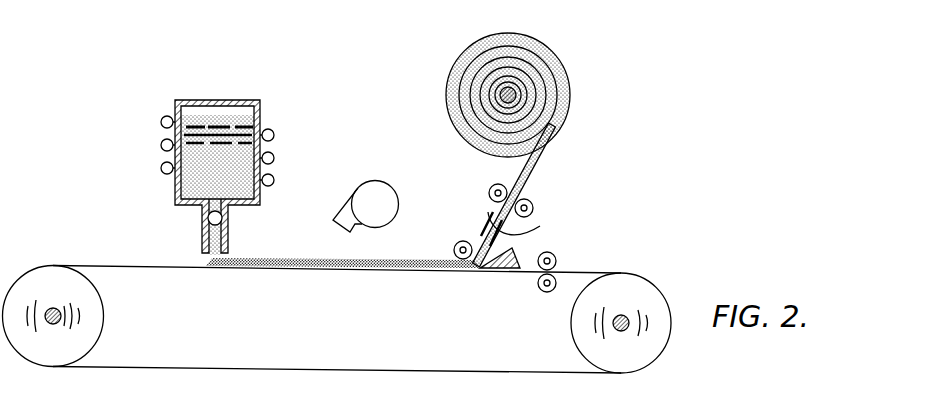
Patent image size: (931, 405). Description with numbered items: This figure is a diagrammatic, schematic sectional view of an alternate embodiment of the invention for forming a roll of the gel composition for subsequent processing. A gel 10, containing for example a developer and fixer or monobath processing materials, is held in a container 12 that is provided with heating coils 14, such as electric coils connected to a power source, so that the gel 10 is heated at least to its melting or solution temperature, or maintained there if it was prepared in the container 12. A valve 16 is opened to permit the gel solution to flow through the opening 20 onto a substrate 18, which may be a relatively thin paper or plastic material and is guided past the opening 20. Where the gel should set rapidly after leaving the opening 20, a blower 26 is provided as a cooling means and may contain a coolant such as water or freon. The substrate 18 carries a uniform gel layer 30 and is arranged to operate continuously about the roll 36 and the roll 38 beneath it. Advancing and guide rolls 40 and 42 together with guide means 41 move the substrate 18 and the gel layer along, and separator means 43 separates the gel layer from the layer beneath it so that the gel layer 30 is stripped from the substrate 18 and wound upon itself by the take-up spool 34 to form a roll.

The gel composition 10 is at (206, 177).
The container 12 is at (176, 197).
The heating coils 14 is at (161, 121).
The valve 16 is at (208, 221).
The substrate 18 is at (121, 266).
The opening 20 is at (206, 262).
The blower 26 is at (362, 185).
The gel layer 30 is at (404, 260).
The take-up spool 34 is at (447, 78).
The roll 36 is at (42, 276).
The belt roller 38 is at (655, 291).
The advancing and guide rolls 40 is at (456, 243).
The guide means 41 is at (540, 227).
The advancing and guide rolls 42 is at (556, 281).
The separator means 43 is at (502, 270).